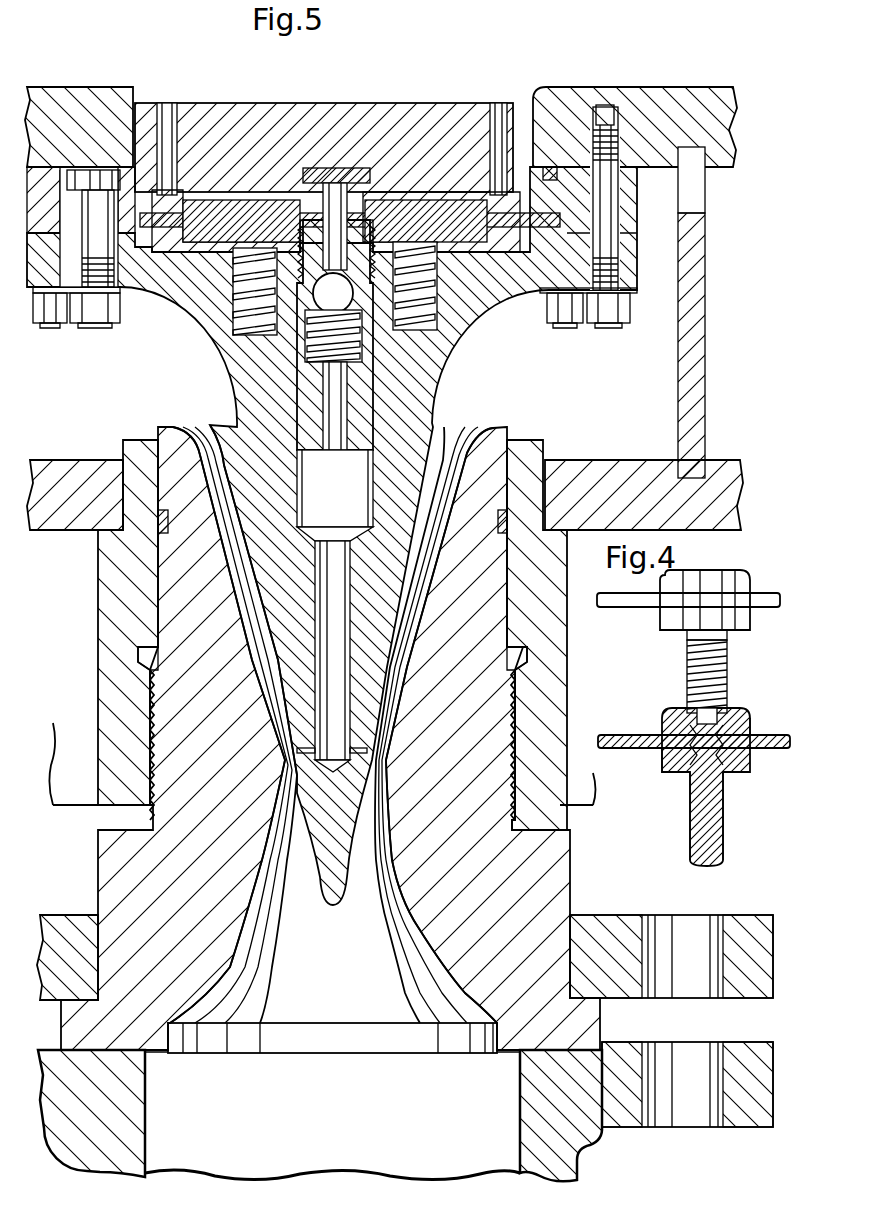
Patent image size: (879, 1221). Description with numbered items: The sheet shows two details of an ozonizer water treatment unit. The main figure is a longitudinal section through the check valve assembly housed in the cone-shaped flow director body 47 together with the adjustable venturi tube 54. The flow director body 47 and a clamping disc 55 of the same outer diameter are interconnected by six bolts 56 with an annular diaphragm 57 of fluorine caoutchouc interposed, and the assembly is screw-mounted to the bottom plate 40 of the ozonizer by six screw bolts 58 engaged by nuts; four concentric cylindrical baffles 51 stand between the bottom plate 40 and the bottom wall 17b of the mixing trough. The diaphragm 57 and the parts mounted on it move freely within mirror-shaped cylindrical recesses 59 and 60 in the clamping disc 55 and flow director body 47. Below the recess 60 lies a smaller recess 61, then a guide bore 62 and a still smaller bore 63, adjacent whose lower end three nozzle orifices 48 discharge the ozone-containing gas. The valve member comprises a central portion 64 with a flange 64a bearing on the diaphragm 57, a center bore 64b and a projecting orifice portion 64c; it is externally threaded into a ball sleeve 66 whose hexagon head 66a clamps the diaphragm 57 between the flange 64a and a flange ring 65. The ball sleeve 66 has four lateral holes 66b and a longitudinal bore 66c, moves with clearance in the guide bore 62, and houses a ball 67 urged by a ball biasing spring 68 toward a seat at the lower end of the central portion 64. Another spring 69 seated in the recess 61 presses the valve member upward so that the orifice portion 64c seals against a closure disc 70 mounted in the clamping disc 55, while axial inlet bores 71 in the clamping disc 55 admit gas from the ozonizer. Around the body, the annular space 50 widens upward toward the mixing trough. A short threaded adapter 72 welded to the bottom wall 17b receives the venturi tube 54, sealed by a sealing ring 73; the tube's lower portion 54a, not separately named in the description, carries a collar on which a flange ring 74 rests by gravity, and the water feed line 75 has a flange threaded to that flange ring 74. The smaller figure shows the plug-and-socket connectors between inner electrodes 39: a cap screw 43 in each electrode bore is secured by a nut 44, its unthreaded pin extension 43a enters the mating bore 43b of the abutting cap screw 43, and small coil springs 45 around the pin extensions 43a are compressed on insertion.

In FIG. 5, the bottom plate 40 is at (717, 124).
In FIG. 5, the clamping disc 55 is at (440, 103).
In FIG. 5, the inlet bores 71 is at (170, 108).
In FIG. 5, the cylindrical recess 59 is at (443, 197).
In FIG. 5, the screw bolts 58 is at (610, 245).
In FIG. 5, the annular diaphragm 57 is at (553, 225).
In FIG. 5, the bolts 56 is at (96, 300).
In FIG. 5, the cylindrical baffles 51 is at (697, 262).
In FIG. 5, the central portion 64 is at (300, 213).
In FIG. 5, the flange 64a is at (250, 200).
In FIG. 5, the center bore 64b is at (390, 200).
In FIG. 5, the projecting orifice portion 64c is at (352, 172).
In FIG. 5, the closure disc 70 is at (338, 205).
In FIG. 5, the flange ring 65 is at (467, 233).
In FIG. 5, the cylindrical recess 60 is at (510, 243).
In FIG. 5, the recess 61 is at (452, 300).
In FIG. 5, the lateral holes 66b is at (373, 297).
In FIG. 5, the ball 67 is at (322, 305).
In FIG. 5, the hexagon head 66a is at (277, 267).
In FIG. 5, the spring 69 is at (253, 292).
In FIG. 5, the ball biasing spring 68 is at (297, 350).
In FIG. 5, the ball sleeve 66 is at (303, 397).
In FIG. 5, the longitudinal bore 66c is at (336, 473).
In FIG. 5, the guide bore 62 is at (323, 514).
In FIG. 5, the bore 63 is at (345, 690).
In FIG. 5, the flow director body 47 is at (197, 437).
In FIG. 5, the annular space 50 is at (440, 440).
In FIG. 5, the nozzle orifices 48 is at (288, 753).
In FIG. 5, the sealing ring 73 is at (160, 521).
In FIG. 5, the adapter 72 is at (110, 608).
In FIG. 5, the bottom wall 17b is at (625, 465).
In FIG. 5, the venturi tube 54 is at (112, 858).
In FIG. 5, the valve body lower part 54a is at (93, 1043).
In FIG. 5, the flange ring 74 is at (600, 930).
In FIG. 5, the water feed line 75 is at (567, 1165).
In FIG. 4, the inner electrode 39 is at (780, 596).
In FIG. 4, the coil springs 45 is at (688, 668).
In FIG. 4, the cap screw 43 is at (665, 716).
In FIG. 4, the mating bore 43b is at (732, 712).
In FIG. 4, the nut 44 is at (668, 768).
In FIG. 4, the pin extension 43a is at (715, 818).